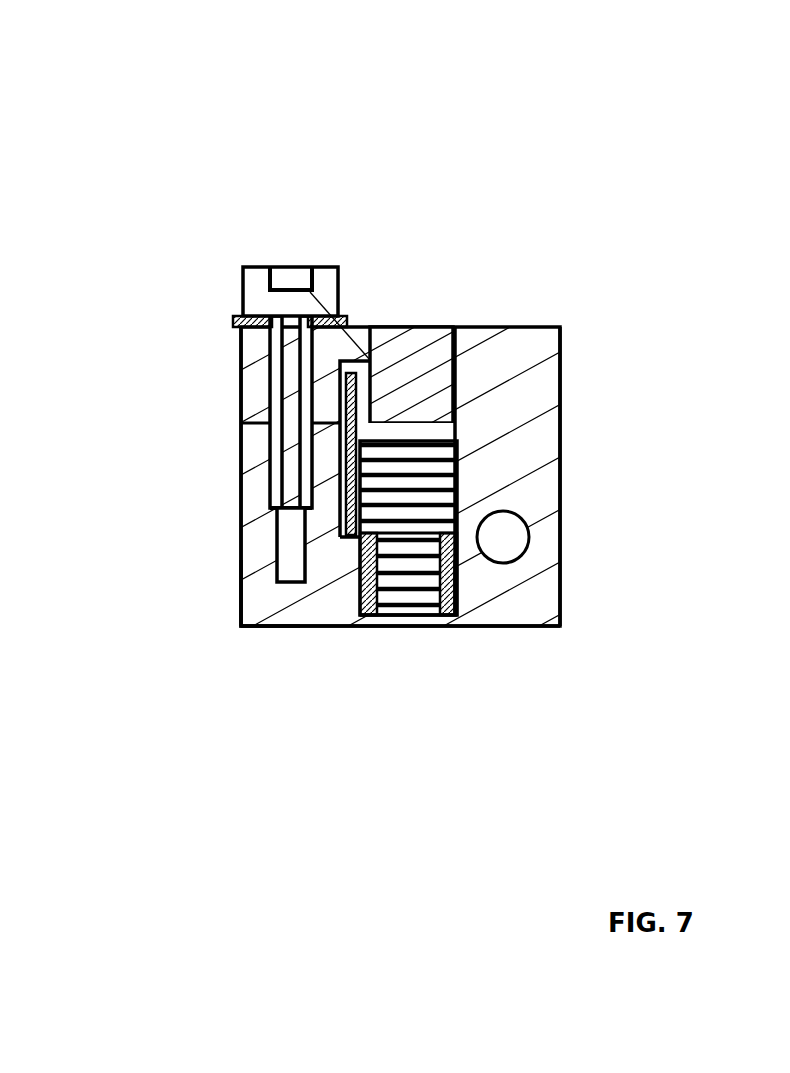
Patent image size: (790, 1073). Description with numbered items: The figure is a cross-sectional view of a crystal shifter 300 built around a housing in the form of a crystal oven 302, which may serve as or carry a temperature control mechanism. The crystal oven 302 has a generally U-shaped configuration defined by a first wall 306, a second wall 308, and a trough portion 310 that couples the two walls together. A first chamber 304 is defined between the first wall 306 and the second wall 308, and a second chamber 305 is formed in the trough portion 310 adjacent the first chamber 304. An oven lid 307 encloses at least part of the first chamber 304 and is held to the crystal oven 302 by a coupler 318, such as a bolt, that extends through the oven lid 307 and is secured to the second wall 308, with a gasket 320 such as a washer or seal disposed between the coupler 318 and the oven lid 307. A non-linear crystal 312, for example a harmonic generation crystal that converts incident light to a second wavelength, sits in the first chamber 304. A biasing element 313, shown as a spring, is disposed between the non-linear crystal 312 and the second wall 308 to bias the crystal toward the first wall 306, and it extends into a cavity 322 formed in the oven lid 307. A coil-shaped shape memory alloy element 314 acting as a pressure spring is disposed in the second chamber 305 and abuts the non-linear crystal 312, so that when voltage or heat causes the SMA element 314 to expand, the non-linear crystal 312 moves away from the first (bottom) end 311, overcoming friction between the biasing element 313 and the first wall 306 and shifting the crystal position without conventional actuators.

The crystal shifter 300 is at (188, 128).
The crystal oven 302 is at (501, 321).
The first chamber 304 is at (445, 434).
The second chamber 305 is at (460, 588).
The first wall 306 is at (552, 425).
The oven lid 307 is at (241, 413).
The second wall 308 is at (240, 595).
The trough portion 310 is at (395, 618).
The first (bottom) end 311 is at (337, 627).
The non-linear crystal 312 is at (458, 477).
The biasing element 313 is at (343, 441).
The shape memory alloy (SMA) element 314 is at (455, 616).
The coupler 318 is at (292, 315).
The gasket 320 is at (240, 317).
The cavity 322 is at (357, 368).